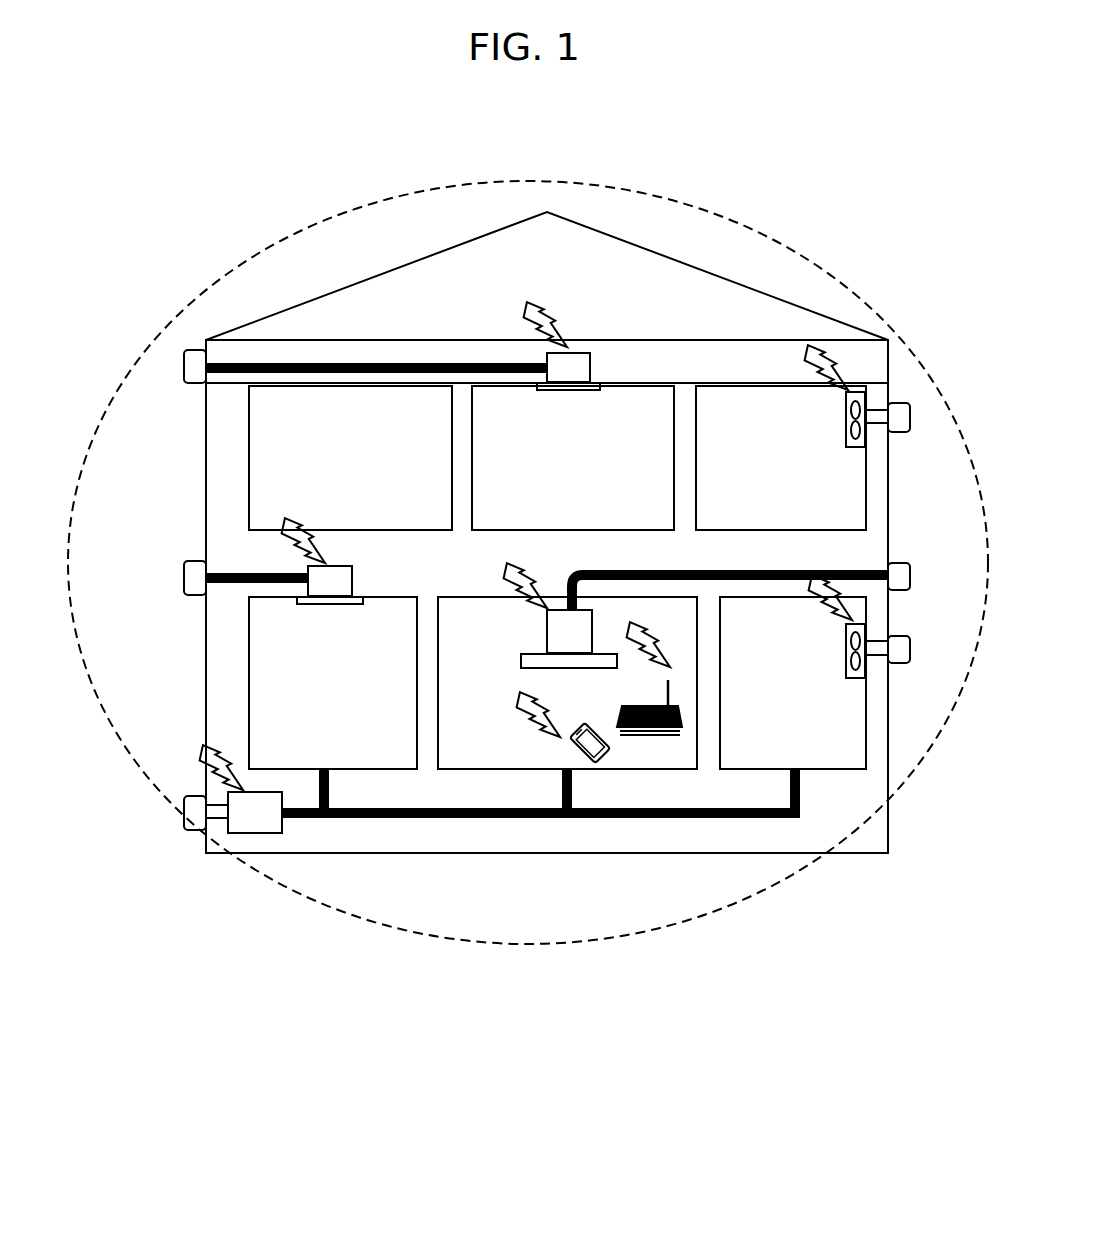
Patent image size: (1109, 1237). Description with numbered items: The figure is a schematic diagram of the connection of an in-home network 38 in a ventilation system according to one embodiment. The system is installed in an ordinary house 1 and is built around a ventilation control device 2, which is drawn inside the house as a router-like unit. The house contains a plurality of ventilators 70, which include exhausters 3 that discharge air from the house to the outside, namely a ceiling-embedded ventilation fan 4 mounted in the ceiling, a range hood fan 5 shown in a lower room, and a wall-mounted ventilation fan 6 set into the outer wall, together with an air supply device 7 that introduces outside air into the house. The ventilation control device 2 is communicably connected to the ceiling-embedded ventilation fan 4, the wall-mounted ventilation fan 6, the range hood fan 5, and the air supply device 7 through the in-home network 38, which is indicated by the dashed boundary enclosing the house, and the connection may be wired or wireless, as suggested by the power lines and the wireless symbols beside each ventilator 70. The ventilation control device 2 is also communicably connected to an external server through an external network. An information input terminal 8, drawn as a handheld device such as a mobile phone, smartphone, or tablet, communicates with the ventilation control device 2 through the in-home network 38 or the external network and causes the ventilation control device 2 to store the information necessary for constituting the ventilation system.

The ordinary house 1 is at (450, 248).
The ventilation control device 2 is at (655, 728).
The exhausters 3 is at (521, 603).
The ceiling-embedded ventilation fan 4 is at (547, 353).
The range hood fan 5 is at (547, 632).
The wall-mounted ventilation fan 6 is at (866, 622).
The air supply device 7 is at (243, 798).
The information input terminal 8 is at (595, 762).
The in-home network 38 is at (527, 945).
The ventilators 70 is at (521, 603).